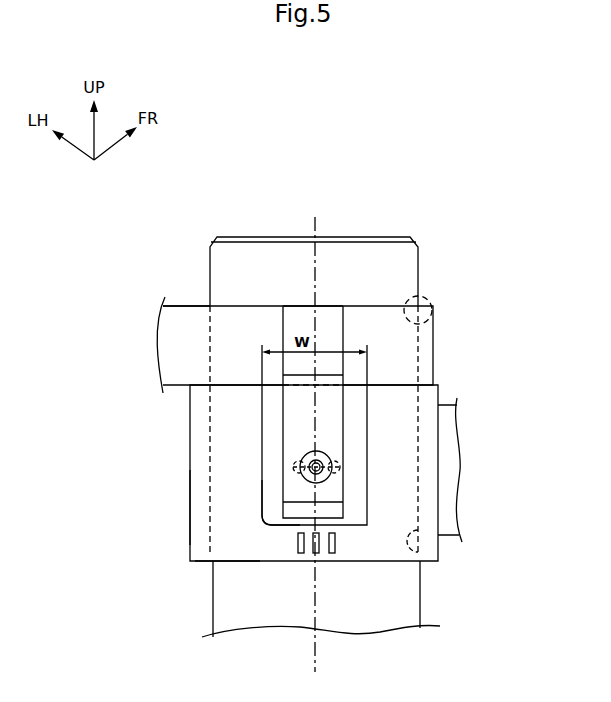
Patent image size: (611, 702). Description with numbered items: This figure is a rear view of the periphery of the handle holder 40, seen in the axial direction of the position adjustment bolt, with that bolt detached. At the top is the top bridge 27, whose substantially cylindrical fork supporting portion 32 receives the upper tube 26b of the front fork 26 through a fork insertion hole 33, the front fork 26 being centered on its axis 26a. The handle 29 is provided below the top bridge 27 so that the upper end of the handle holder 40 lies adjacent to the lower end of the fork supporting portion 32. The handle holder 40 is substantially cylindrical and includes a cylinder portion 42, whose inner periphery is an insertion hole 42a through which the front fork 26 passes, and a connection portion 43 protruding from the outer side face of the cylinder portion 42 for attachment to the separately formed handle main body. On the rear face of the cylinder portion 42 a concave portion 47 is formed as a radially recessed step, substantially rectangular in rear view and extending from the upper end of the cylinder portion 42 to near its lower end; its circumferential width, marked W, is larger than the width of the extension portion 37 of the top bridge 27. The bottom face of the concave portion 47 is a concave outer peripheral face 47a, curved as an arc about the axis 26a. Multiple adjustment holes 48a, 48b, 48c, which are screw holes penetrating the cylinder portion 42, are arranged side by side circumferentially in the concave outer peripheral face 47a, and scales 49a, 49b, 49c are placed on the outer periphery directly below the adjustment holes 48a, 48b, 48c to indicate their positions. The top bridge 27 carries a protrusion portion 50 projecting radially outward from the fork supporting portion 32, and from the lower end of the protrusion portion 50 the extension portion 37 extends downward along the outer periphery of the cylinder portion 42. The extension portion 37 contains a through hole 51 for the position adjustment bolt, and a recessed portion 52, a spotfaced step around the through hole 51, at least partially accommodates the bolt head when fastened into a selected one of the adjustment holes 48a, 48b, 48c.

The front fork 26 is at (427, 255).
The axis of the front fork 26a is at (315, 228).
The upper tube 26b is at (421, 610).
The top bridge 27 is at (177, 297).
The handle 29 is at (181, 510).
The fork supporting portion 32 is at (433, 333).
The fork insertion hole 33 is at (404, 300).
The extension portion 37 is at (285, 423).
The handle holder 40 is at (200, 527).
The cylinder portion 42 is at (202, 543).
The insertion hole 42a is at (430, 553).
The connection portion 43 is at (455, 518).
The concave portion 47 is at (253, 458).
The concave outer peripheral face 47a is at (268, 482).
The adjustment hole 48a is at (328, 455).
The adjustment hole 48b is at (326, 458).
The adjustment hole 48c is at (340, 467).
The scale 49a is at (301, 553).
The scale 49b is at (316, 553).
The scale 49c is at (332, 553).
The protrusion portion 50 is at (298, 317).
The through hole 51 is at (328, 477).
The recessed portion 52 is at (321, 471).